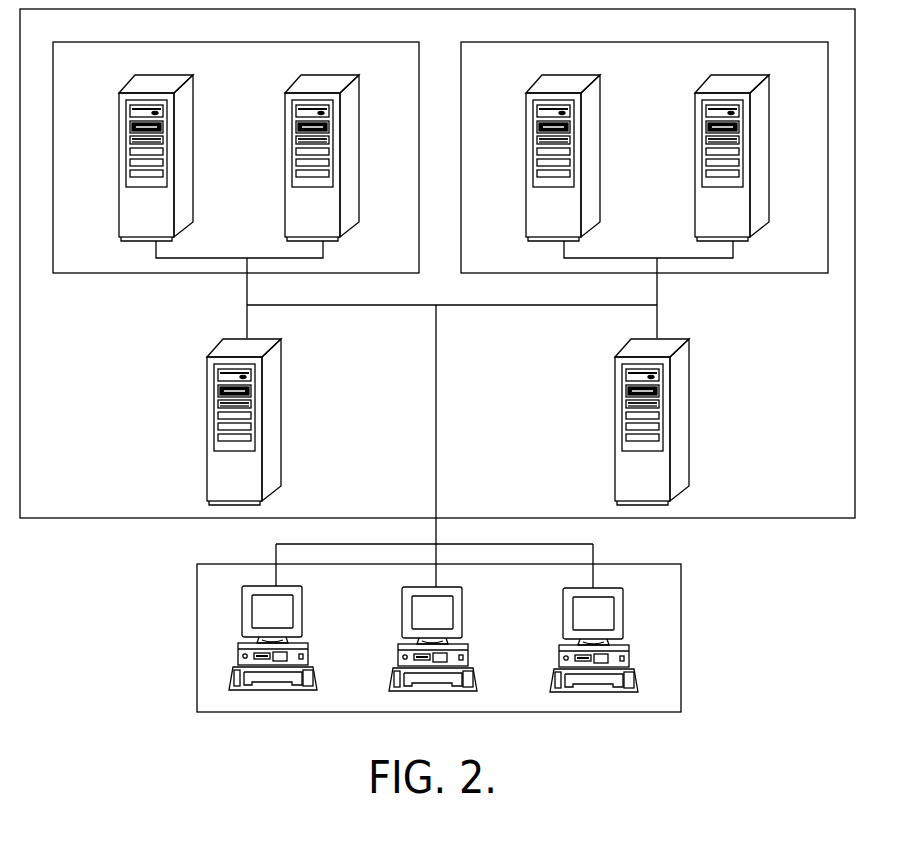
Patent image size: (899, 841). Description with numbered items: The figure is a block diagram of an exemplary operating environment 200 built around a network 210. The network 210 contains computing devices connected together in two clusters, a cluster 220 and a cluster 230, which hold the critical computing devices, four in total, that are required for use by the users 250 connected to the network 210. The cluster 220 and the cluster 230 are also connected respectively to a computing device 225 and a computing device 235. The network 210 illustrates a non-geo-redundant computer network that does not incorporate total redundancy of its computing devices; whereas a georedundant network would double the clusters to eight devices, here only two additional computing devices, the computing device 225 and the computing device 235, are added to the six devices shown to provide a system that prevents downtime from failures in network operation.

The operating environment 200 is at (140, 558).
The network 210 is at (110, 520).
The cluster 220 is at (227, 42).
The computing device 225 is at (207, 387).
The cluster 230 is at (648, 42).
The computing device 235 is at (690, 362).
The users 250 is at (681, 627).